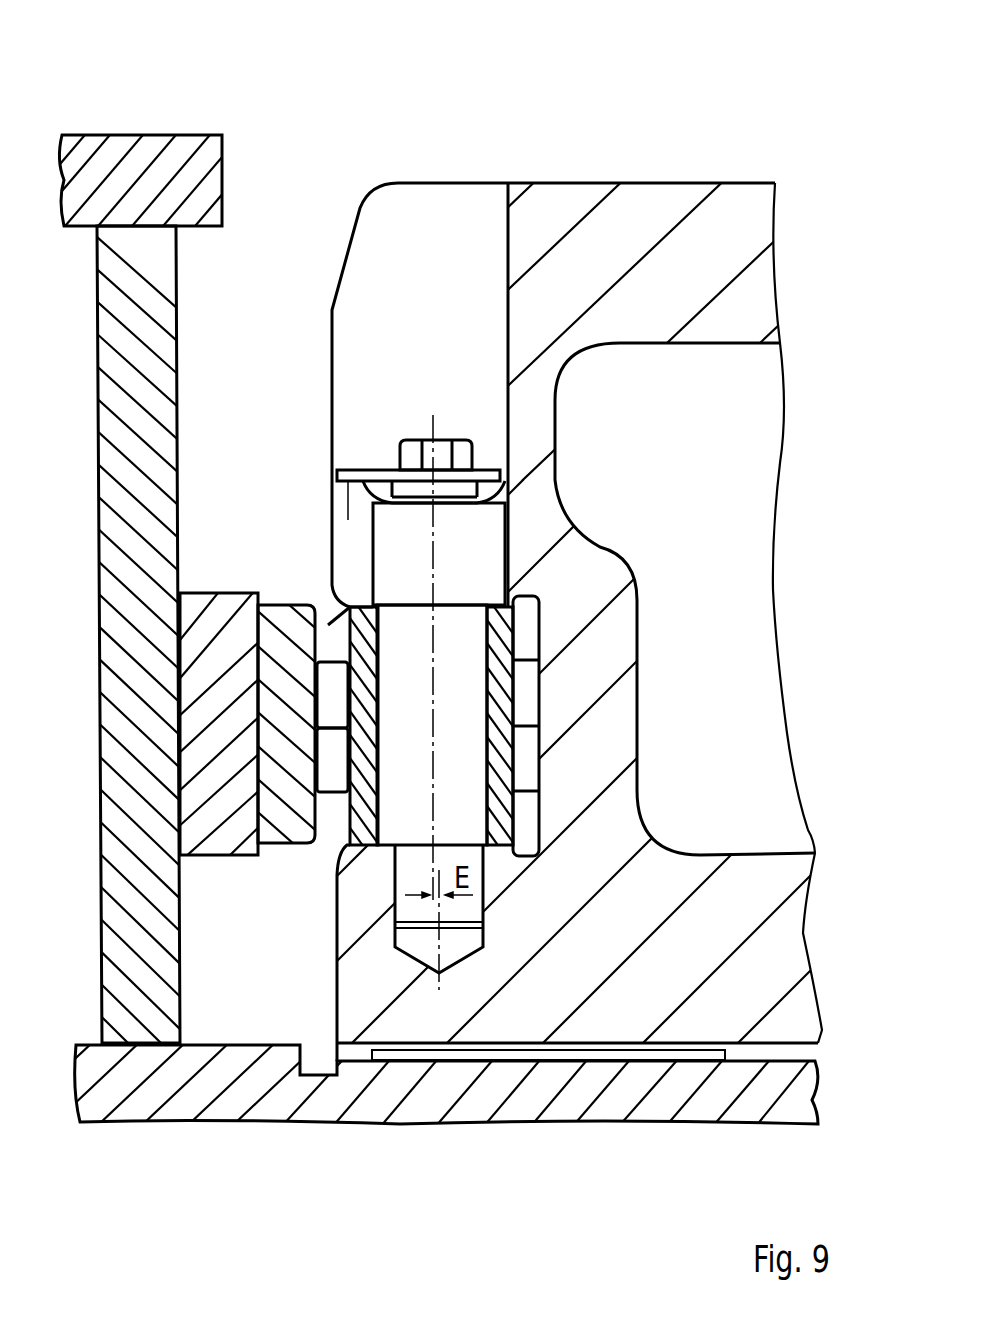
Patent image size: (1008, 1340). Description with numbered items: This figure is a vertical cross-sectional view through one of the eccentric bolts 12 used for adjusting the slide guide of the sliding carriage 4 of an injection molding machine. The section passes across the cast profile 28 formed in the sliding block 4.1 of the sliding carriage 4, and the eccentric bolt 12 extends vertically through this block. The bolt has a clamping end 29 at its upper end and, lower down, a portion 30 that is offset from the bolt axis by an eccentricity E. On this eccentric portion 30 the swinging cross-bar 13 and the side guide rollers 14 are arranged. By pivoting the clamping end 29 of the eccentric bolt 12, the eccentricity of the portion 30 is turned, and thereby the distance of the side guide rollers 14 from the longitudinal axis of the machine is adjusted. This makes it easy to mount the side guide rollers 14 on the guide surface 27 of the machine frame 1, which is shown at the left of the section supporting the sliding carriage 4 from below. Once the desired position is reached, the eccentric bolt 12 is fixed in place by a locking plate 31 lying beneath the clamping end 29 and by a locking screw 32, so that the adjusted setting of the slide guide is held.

The machine frame 1 is at (125, 283).
The sliding carriage 4 is at (676, 183).
The sliding block 4.1 is at (700, 250).
The eccentric bolt 12 is at (457, 695).
The swinging cross-bar 13 is at (508, 642).
The side guide rollers 14 is at (327, 752).
The guide surface 27 is at (317, 797).
The cast profile 28 is at (328, 625).
The clamping end 29 is at (440, 453).
The portion of the bolt 30 is at (462, 765).
The locking plate 31 is at (480, 472).
The locking screw 32 is at (348, 470).